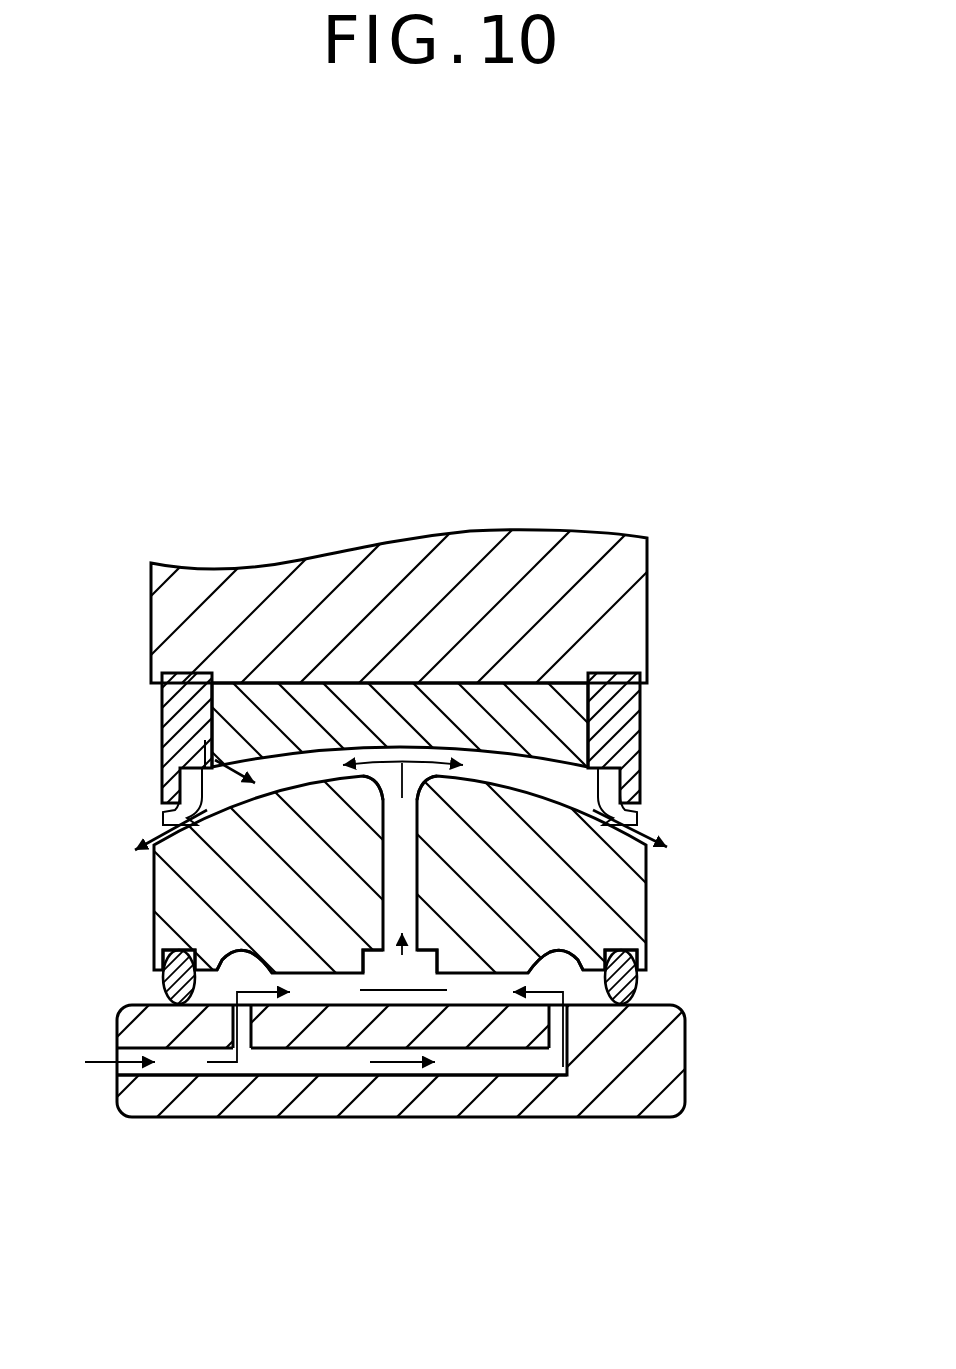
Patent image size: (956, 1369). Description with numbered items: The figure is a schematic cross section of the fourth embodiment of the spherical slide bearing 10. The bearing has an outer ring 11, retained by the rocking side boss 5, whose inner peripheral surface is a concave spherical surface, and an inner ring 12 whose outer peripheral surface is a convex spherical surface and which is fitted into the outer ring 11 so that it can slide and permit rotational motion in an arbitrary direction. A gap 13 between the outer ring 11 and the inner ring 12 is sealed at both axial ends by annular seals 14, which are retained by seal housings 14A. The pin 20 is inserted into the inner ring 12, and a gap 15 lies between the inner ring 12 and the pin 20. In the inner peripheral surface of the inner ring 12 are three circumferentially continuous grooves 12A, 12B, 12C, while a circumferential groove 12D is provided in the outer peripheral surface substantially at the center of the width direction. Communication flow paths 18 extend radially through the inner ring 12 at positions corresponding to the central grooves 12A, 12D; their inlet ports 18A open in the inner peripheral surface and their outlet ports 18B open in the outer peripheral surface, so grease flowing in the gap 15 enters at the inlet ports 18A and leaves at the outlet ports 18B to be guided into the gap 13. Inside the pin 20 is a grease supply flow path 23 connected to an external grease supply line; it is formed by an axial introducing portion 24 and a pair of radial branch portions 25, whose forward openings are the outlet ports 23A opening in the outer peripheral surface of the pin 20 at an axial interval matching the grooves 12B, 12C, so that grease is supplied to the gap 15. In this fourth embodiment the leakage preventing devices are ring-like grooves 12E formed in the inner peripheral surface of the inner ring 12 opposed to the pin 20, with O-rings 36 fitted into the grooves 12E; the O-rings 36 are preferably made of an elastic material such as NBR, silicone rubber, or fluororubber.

The rocking side boss 5 is at (640, 568).
The spherical slide bearing 10 is at (762, 777).
The outer ring 11 is at (577, 710).
The gap 13 is at (207, 738).
The seal 14 is at (163, 820).
The seal housing 14A is at (162, 713).
The inner ring 12 is at (640, 862).
The groove 12A is at (433, 960).
The groove 12B is at (222, 955).
The groove 12C is at (590, 973).
The circumferential groove 12D is at (360, 790).
The ring-like groove 12E is at (158, 953).
The gap 15 is at (217, 985).
The communication flow path 18 is at (408, 888).
The inlet port 18A is at (357, 957).
The outlet port 18B is at (455, 800).
The pin 20 is at (311, 1117).
The grease supply flow path 23 is at (497, 1075).
The outlet port 23A is at (236, 1003).
The introducing portion 24 is at (437, 1075).
The branch portion 25 is at (248, 1050).
The O-ring 36 is at (162, 987).